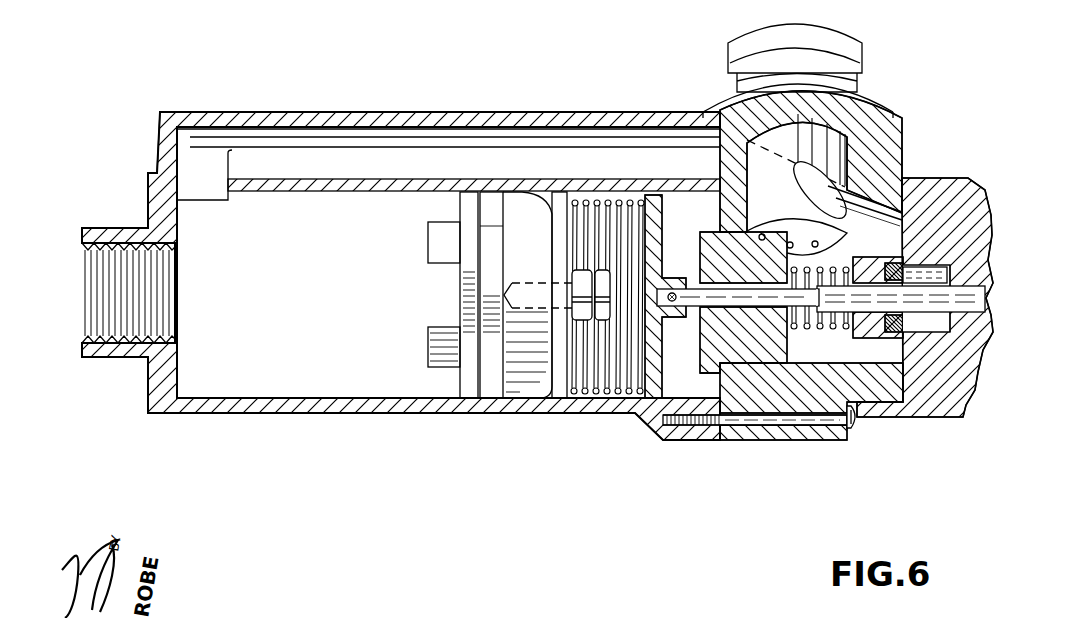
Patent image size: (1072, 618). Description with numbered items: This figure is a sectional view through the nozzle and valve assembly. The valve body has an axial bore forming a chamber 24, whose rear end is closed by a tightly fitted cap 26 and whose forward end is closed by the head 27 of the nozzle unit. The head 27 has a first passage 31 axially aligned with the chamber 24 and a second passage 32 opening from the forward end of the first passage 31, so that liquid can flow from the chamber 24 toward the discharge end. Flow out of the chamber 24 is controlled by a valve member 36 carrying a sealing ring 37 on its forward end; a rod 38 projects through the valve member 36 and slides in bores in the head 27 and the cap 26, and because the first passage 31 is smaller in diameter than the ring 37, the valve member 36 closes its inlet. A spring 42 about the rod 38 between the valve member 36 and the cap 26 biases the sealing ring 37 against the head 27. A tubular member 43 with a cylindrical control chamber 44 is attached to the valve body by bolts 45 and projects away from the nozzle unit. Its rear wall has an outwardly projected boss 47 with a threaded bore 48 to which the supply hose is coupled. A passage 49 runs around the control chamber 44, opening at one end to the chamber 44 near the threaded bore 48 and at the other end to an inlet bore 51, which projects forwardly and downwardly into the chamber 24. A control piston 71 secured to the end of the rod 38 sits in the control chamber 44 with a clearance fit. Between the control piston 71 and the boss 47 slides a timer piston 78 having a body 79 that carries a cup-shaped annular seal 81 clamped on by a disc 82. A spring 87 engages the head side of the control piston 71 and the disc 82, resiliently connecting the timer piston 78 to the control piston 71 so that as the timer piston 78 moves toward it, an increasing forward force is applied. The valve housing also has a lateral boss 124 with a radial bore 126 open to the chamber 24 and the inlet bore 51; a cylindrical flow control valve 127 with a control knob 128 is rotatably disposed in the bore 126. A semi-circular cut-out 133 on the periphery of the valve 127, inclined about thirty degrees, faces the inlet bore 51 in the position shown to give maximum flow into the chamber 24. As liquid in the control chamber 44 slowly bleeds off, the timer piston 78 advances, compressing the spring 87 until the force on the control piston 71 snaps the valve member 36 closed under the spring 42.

The chamber 24 is at (840, 360).
The cap 26 is at (719, 373).
The head 27 is at (947, 407).
The first passage 31 is at (936, 333).
The second passage 32 is at (978, 334).
The valve member 36 is at (865, 258).
The sealing ring 37 is at (895, 263).
The rod 38 is at (985, 296).
The spring 42 is at (803, 328).
The tubular member 43 is at (360, 408).
The control chamber 44 is at (690, 348).
The bolts 45 is at (828, 422).
The boss 47 is at (121, 206).
The threaded bore 48 is at (113, 318).
The passage 49 is at (452, 152).
The inlet bore 51 is at (875, 228).
The control piston 71 is at (653, 231).
The timer piston 78 is at (448, 292).
The body 79 is at (470, 394).
The cup-shaped annular seal 81 is at (527, 380).
The disc 82 is at (560, 398).
The spring 87 is at (593, 395).
The lateral boss 124 is at (895, 131).
The radial bore 126 is at (880, 160).
The cylindrical flow control valve 127 is at (776, 178).
The control knob 128 is at (853, 50).
The semi-circular cut-out 133 is at (797, 186).